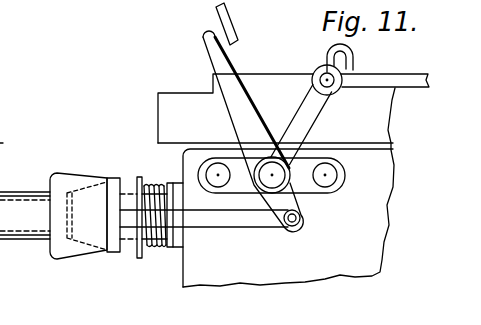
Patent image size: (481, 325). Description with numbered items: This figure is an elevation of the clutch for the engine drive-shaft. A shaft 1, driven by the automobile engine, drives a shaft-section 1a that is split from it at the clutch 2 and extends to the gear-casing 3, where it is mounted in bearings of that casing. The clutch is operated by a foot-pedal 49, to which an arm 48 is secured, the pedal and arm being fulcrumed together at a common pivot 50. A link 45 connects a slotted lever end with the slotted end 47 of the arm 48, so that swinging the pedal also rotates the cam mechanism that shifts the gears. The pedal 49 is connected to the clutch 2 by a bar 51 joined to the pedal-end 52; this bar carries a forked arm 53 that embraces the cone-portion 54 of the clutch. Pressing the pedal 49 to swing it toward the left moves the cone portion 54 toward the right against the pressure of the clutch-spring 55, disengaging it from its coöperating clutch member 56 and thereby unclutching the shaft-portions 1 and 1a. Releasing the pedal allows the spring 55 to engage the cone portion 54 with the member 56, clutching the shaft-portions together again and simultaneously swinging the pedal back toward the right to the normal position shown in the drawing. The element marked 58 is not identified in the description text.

The shaft 1 is at (25, 215).
The shaft-section 1a is at (161, 250).
The clutch 2 is at (114, 234).
The gear-casing 3 is at (276, 180).
The link 45 is at (397, 76).
The slotted end 47 is at (330, 58).
The arm 48 is at (323, 94).
The pedal 49 is at (243, 110).
The pivot 50 is at (296, 192).
The bar 51 is at (225, 228).
The pedal-end 52 is at (289, 227).
The forked arm 53 is at (128, 185).
The cone-portion 54 is at (110, 251).
The clutch-spring 55 is at (147, 200).
The clutch member 56 is at (60, 252).
The member 58 is at (12, 122).